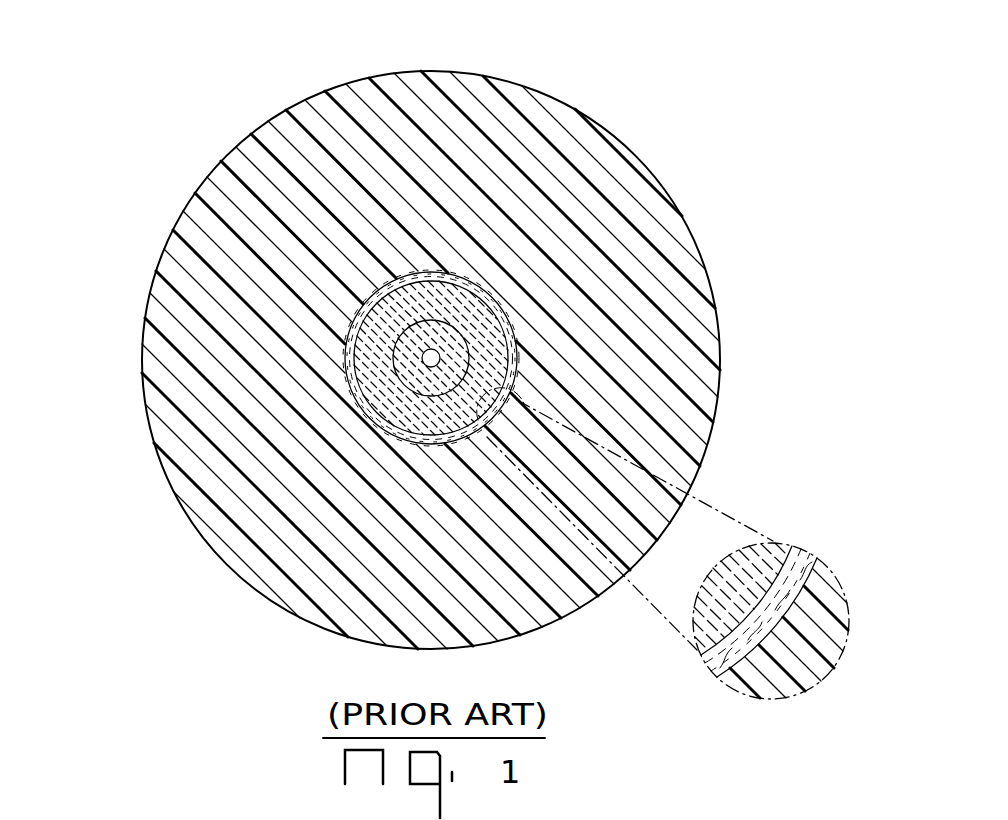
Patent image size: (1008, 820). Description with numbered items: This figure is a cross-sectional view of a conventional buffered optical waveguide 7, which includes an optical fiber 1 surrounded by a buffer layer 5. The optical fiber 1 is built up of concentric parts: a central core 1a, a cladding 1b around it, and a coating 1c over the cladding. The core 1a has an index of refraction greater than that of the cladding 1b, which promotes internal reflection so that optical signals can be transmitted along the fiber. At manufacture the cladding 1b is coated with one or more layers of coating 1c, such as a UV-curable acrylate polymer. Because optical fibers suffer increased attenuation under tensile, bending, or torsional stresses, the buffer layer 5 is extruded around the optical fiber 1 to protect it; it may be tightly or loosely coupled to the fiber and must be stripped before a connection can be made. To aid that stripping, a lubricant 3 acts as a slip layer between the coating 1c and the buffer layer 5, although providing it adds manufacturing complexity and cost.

The buffered optical waveguide 7 is at (247, 75).
The buffer layer 5 is at (582, 153).
The lubricant 3 is at (519, 345).
The optical fiber 1 is at (385, 399).
The core 1a is at (367, 303).
The cladding 1b is at (413, 378).
The coating 1c is at (480, 320).